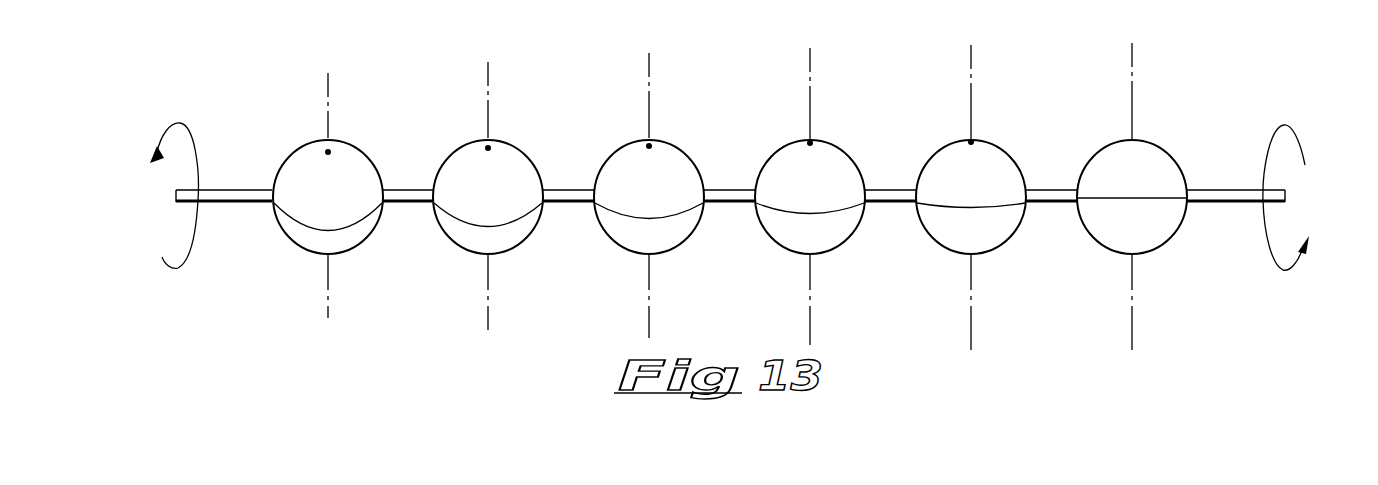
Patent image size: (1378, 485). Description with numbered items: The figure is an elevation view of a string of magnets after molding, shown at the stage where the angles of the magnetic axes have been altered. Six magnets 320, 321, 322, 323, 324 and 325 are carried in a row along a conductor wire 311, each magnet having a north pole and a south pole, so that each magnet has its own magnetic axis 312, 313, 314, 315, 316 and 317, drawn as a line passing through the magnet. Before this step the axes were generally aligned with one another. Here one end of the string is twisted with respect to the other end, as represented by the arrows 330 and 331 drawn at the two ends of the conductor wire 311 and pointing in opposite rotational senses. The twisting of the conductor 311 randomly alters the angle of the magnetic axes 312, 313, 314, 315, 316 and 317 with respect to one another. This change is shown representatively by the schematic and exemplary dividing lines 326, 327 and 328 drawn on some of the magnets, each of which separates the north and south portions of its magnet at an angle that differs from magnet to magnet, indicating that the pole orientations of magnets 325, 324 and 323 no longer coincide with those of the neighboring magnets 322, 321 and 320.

The conductor wire 311 is at (400, 202).
The magnetic axis 312 is at (1133, 58).
The magnetic axis 313 is at (972, 63).
The magnetic axis 314 is at (811, 68).
The magnetic axis 315 is at (650, 70).
The magnetic axis 316 is at (489, 78).
The magnetic axis 317 is at (329, 87).
The magnet 320 is at (1152, 191).
The magnet 321 is at (991, 202).
The magnet 322 is at (830, 202).
The magnet 323 is at (669, 206).
The magnet 324 is at (508, 207).
The magnet 325 is at (348, 212).
The dividing line 326 is at (311, 230).
The dividing line 327 is at (478, 218).
The dividing line 328 is at (632, 218).
The arrow 330 is at (1300, 139).
The arrow 331 is at (191, 122).